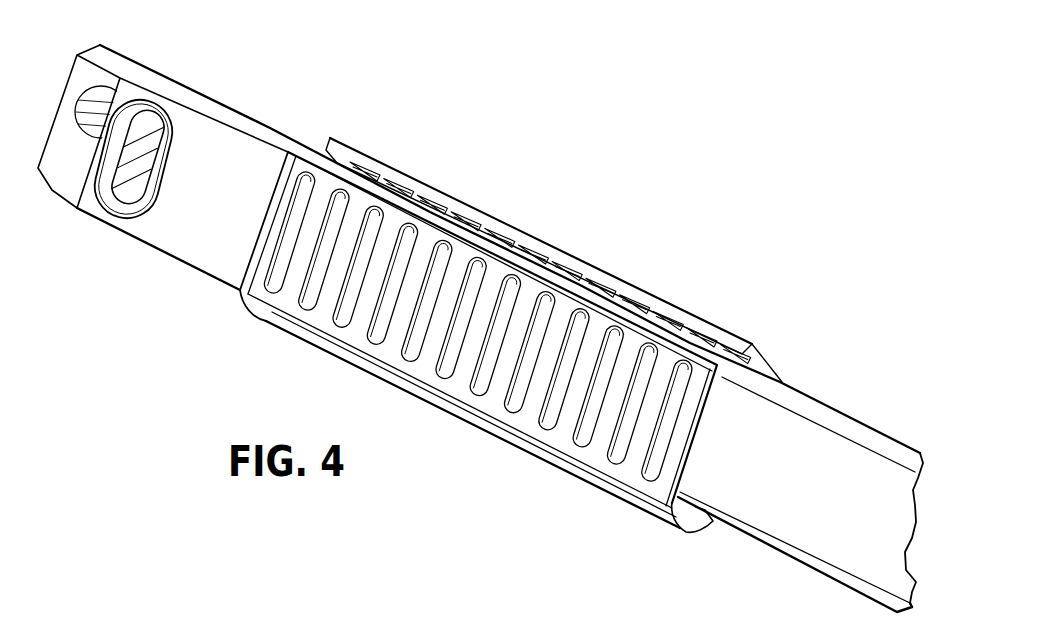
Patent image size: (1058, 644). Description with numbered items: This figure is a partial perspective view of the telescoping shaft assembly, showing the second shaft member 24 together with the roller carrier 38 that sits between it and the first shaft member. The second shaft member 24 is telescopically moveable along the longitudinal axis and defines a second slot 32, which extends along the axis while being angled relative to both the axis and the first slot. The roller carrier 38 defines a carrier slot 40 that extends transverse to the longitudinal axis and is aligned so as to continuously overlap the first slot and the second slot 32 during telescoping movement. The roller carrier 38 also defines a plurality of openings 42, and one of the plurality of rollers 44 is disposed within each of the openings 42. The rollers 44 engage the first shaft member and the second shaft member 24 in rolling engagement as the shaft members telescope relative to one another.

The second shaft member 24 is at (110, 60).
The second slot 32 is at (78, 98).
The roller carrier 38 is at (452, 192).
The carrier slot 40 is at (126, 208).
The openings 42 is at (480, 266).
The rollers 44 is at (417, 340).